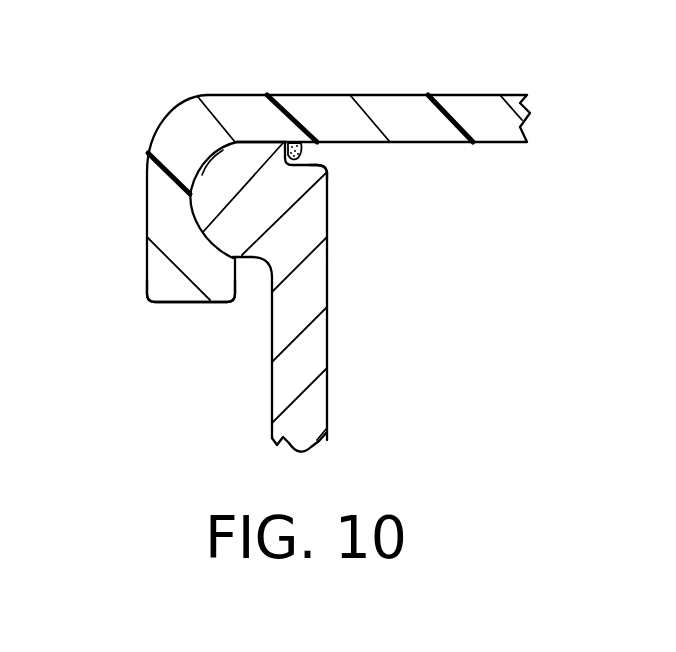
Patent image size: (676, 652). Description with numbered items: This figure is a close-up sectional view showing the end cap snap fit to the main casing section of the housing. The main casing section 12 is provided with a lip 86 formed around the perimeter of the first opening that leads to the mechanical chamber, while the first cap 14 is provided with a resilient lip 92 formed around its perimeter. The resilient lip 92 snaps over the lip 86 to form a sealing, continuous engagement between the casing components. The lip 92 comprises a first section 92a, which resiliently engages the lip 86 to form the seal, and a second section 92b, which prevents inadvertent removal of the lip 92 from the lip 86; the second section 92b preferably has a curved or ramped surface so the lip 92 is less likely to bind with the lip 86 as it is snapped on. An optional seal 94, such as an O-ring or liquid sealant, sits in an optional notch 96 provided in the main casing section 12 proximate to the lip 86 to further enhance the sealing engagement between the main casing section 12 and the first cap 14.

The main casing section 12 is at (307, 353).
The first cap 14 is at (417, 104).
The lip 86 is at (243, 236).
The resilient lip 92 is at (116, 256).
The first section 92a is at (147, 178).
The second section 92b is at (202, 273).
The seal 94 is at (302, 140).
The notch 96 is at (307, 165).